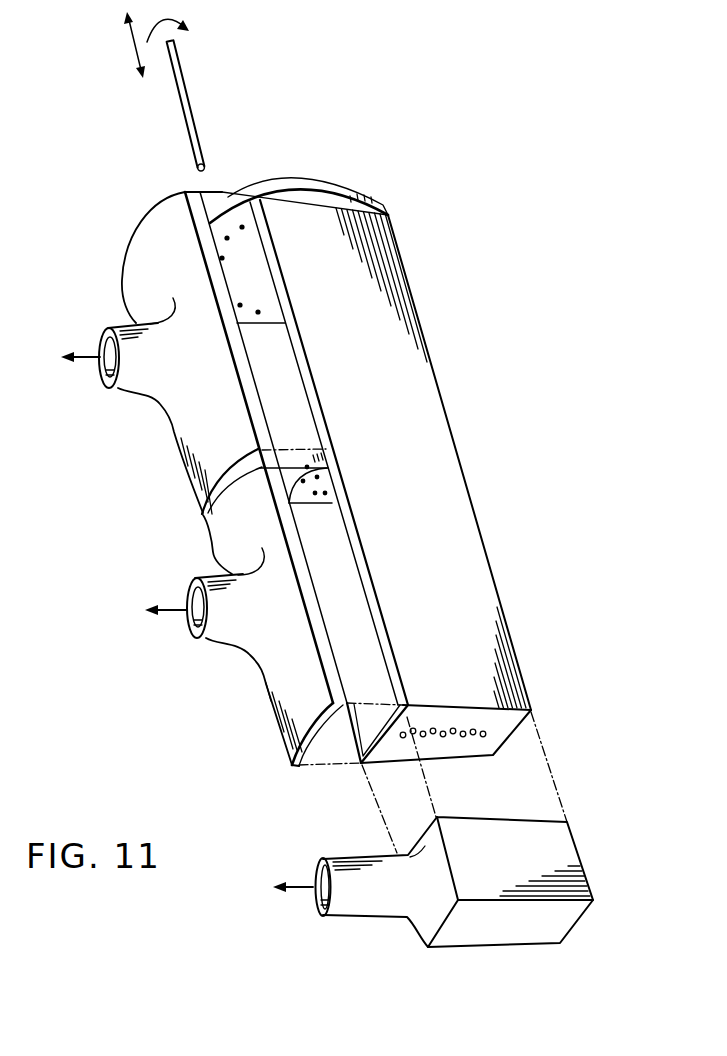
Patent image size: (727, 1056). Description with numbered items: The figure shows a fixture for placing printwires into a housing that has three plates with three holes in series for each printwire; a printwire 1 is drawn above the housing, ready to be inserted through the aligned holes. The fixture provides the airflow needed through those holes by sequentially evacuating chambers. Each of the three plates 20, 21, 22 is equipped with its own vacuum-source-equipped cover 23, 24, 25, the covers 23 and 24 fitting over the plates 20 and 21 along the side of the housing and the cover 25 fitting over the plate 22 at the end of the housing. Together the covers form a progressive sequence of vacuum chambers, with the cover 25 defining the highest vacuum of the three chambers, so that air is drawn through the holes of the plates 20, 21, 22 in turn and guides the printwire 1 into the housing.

The rod 1 is at (185, 107).
The plate 20 is at (243, 217).
The plate 21 is at (330, 478).
The plate 22 is at (515, 720).
The vacuum-source-equipped cover 23 is at (142, 293).
The vacuum-source-equipped cover 24 is at (223, 563).
The vacuum-source-equipped cover 25 is at (580, 865).